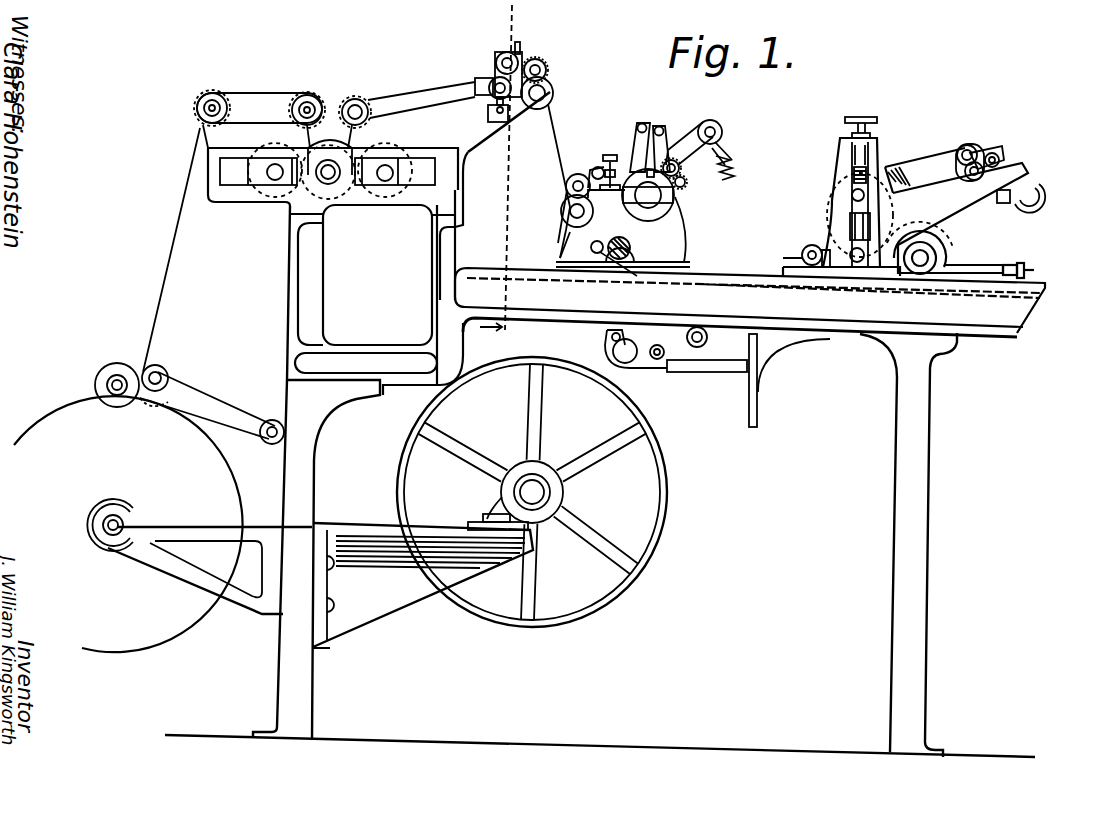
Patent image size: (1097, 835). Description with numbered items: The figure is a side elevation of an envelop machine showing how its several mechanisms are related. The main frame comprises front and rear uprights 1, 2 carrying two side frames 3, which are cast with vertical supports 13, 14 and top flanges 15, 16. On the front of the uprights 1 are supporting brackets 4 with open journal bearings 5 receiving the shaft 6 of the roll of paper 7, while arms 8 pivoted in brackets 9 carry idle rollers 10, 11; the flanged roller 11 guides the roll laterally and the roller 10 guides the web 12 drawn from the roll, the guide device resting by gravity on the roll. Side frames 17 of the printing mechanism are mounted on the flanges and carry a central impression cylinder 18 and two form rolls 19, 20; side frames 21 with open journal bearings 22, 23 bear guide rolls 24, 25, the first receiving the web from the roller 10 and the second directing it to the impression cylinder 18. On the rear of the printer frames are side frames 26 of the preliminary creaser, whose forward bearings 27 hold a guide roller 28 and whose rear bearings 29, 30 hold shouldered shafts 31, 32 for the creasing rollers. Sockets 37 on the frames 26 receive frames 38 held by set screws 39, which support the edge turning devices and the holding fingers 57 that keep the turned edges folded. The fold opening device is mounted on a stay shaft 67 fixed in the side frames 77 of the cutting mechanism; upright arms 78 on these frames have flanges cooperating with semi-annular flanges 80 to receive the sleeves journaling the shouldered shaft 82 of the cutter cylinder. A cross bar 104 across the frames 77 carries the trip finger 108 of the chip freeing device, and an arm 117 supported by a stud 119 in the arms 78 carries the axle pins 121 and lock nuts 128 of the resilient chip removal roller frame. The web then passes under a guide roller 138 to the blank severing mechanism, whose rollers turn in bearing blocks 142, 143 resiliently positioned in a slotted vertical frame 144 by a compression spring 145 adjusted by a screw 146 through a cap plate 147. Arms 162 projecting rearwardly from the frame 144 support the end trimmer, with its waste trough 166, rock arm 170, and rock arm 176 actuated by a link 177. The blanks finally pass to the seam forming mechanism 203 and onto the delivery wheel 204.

The uprights 1 is at (295, 682).
The uprights 2 is at (900, 568).
The side frames 3 is at (1007, 307).
The supporting brackets 4 is at (242, 603).
The open journal bearings 5 is at (128, 520).
The shaft 6 is at (118, 518).
The roll of paper 7 is at (132, 624).
The arms 8 is at (216, 410).
The brackets 9 is at (276, 445).
The idle roller 10 is at (166, 368).
The idle roller 11 is at (115, 364).
The web 12 is at (168, 282).
The vertical support 13 is at (320, 282).
The vertical support 14 is at (447, 245).
The top flange 15 is at (318, 220).
The top flange 16 is at (464, 225).
The side frames 17 is at (258, 188).
The central impression cylinder 18 is at (328, 160).
The form roll 19 is at (272, 150).
The form roll 20 is at (400, 148).
The side frames 21 is at (225, 130).
The open journal bearing 22 is at (225, 100).
The open journal bearing 23 is at (303, 98).
The guide roll 24 is at (208, 95).
The guide roll 25 is at (314, 102).
The side frames 26 is at (453, 125).
The open journaled bearings 27 is at (400, 97).
The guide roller 28 is at (356, 100).
The open journaled bearing 29 is at (554, 93).
The open journaled bearing 30 is at (547, 67).
The shouldered shaft 31 is at (545, 90).
The shouldered shaft 32 is at (537, 60).
The sockets 37 is at (508, 117).
The frames 38 is at (497, 72).
The set screws 39 is at (500, 177).
The holding fingers 57 is at (519, 42).
The stay shaft 67 is at (750, 292).
The side frames 77 is at (592, 226).
The upright arms 78 is at (640, 140).
The semi-annular flanges 80 is at (652, 200).
The shouldered shaft 82 is at (655, 200).
The cross bar 104 is at (572, 165).
The trip finger 108 is at (592, 192).
The arm 117 is at (686, 146).
The stud 119 is at (606, 163).
The axle pins 121 is at (730, 143).
The lock nuts 128 is at (746, 160).
The guide roller 138 is at (800, 256).
The bearing block 142 is at (852, 188).
The bearing block 143 is at (852, 243).
The slotted vertical frame 144 is at (850, 196).
The compression spring 145 is at (837, 157).
The screw 146 is at (847, 113).
The cap plate 147 is at (880, 140).
The arms 162 is at (968, 195).
The waste pan or trough 166 is at (1043, 200).
The rock arm 170 is at (1003, 154).
The rock arm 176 is at (977, 150).
The link 177 is at (922, 166).
The seam forming mechanism 203 is at (687, 370).
The delivery wheel 204 is at (665, 492).